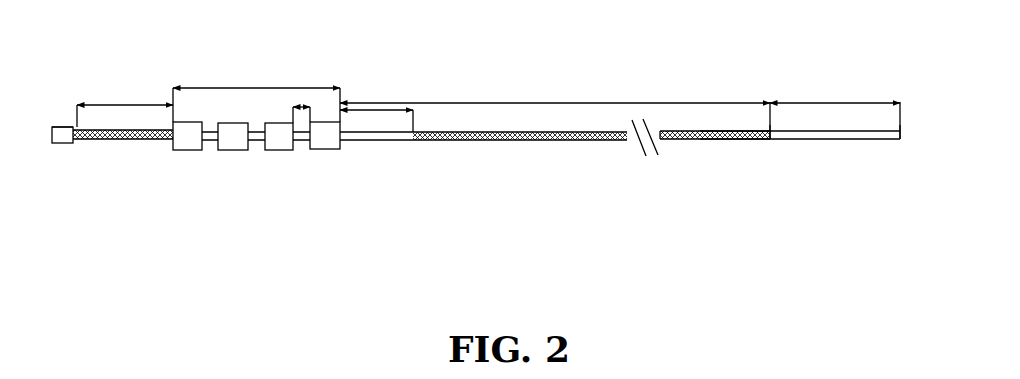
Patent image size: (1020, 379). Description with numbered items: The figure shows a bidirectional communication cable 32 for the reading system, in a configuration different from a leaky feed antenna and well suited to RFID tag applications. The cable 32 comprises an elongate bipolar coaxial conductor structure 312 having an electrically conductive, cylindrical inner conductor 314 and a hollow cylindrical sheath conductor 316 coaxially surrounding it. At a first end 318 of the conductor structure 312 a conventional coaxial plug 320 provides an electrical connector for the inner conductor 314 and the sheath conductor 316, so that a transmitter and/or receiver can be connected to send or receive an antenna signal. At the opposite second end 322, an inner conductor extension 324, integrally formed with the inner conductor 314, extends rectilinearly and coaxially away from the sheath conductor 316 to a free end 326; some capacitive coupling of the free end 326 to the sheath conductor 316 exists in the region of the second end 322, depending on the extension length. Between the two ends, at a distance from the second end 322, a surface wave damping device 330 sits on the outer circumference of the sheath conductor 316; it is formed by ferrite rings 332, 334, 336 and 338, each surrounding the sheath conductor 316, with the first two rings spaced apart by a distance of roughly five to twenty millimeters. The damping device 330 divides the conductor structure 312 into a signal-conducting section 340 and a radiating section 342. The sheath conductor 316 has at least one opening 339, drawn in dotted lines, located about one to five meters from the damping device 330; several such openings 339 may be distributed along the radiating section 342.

The bidirectional communication cable 32 is at (418, 60).
The elongate bipolar coaxial conductor structure 312 is at (524, 147).
The inner conductor 314 is at (698, 147).
The sheath conductor 316 is at (733, 147).
The first end 318 is at (68, 152).
The coaxial plug 320 is at (57, 125).
The second end 322 is at (773, 147).
The inner conductor extension 324 is at (855, 147).
The free end 326 is at (899, 147).
The surface wave damping device 330 is at (271, 60).
The ferrite ring 332 is at (330, 151).
The ferrite ring 334 is at (278, 151).
The ferrite ring 336 is at (233, 151).
The ferrite ring 338 is at (180, 151).
The opening 339 is at (423, 147).
The signal-conducting section 340 is at (137, 84).
The radiating section 342 is at (590, 74).